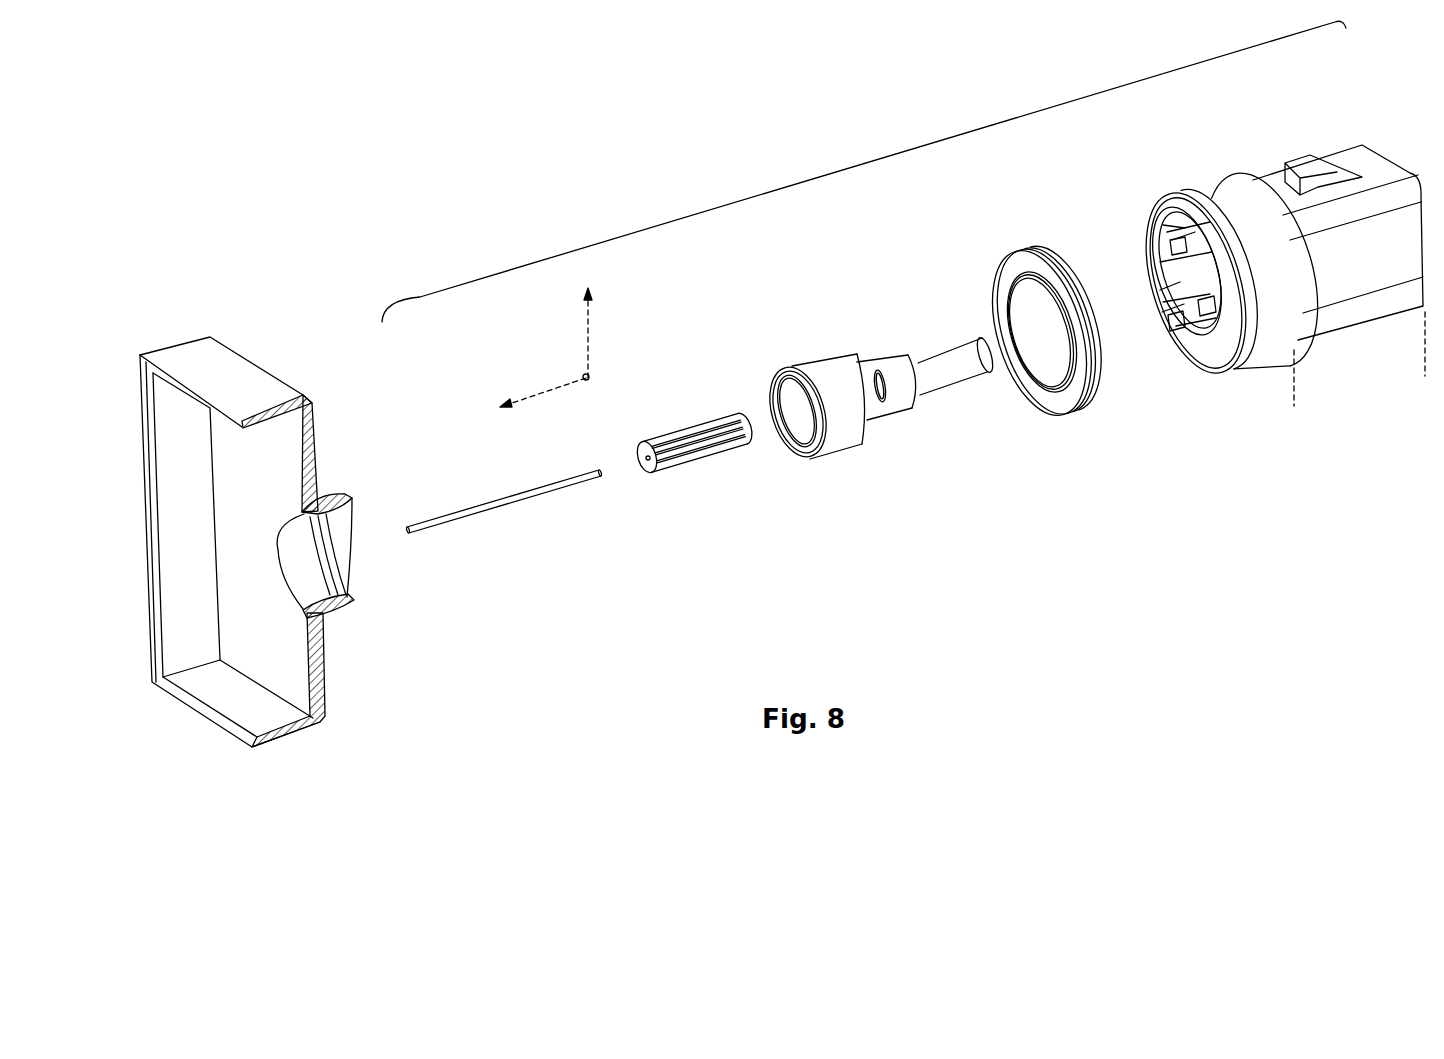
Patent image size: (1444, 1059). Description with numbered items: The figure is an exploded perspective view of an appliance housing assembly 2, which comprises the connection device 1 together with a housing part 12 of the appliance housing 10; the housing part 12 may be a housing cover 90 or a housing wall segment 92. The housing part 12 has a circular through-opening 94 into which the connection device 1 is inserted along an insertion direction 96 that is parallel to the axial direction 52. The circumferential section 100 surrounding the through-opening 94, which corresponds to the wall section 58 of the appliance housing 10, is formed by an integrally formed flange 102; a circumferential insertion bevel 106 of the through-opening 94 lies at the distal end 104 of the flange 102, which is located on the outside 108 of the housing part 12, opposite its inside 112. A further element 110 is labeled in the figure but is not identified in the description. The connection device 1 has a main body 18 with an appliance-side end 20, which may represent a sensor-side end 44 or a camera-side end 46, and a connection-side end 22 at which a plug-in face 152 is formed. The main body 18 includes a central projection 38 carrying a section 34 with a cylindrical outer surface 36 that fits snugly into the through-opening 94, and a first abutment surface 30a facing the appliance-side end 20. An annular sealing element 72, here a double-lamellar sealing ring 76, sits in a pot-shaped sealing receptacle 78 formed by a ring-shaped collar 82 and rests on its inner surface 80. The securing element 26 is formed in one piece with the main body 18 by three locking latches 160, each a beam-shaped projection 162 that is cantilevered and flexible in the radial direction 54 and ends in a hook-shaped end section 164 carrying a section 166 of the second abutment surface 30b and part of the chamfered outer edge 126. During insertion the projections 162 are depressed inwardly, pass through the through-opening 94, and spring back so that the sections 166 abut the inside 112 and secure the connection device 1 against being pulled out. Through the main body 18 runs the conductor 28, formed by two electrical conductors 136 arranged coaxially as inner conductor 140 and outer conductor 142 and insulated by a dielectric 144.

The connection device 1 is at (882, 157).
The appliance housing assembly 2 is at (197, 210).
The appliance housing 10 is at (253, 318).
The housing part 12 is at (281, 571).
The housing cover 90 is at (281, 571).
The housing wall segment 92 is at (289, 743).
The through-opening 94 is at (268, 577).
The flange 102 is at (345, 612).
The distal end 104 is at (367, 616).
The insertion bevel 106 is at (341, 514).
The outside 108 is at (326, 695).
The edge 110 is at (347, 492).
The inside 112 is at (290, 670).
The wall section 58 is at (367, 509).
The circumferential section 100 is at (353, 500).
The axial direction 52 is at (539, 371).
The insertion direction 96 is at (547, 394).
The radial direction 54 is at (593, 332).
The conductor 28 is at (701, 442).
The electrical conductors 136 is at (701, 442).
The inner conductor 140 is at (495, 503).
The outer conductor 142 is at (813, 367).
The dielectric 144 is at (695, 440).
The sealing element 72 is at (1042, 355).
The double-lamellar sealing ring 76 is at (1043, 410).
The appliance-side end 20 is at (1193, 308).
The sensor-side end 44 is at (1193, 308).
The camera-side end 46 is at (1232, 438).
The securing element 26 is at (1157, 236).
The locking latch 160 is at (1157, 236).
The beam-shaped projection 162 is at (1262, 280).
The chamfered outer edge 126 is at (1152, 213).
The second abutment surface 30b is at (1224, 274).
The section of the second abutment surface 166 is at (1208, 240).
The inner surface 80 is at (1158, 205).
The cylindrical outer surface 36 is at (1225, 278).
The end section 164 is at (1152, 303).
The main body 18 is at (1337, 290).
The pot-shaped sealing receptacle 78 is at (1322, 348).
The ring-shaped collar 82 is at (1277, 290).
The plug-in face 152 is at (1425, 376).
The section 34 is at (1142, 410).
The central projection 38 is at (1180, 325).
The first abutment surface 30a is at (1222, 343).
The connection-side end 22 is at (1395, 123).